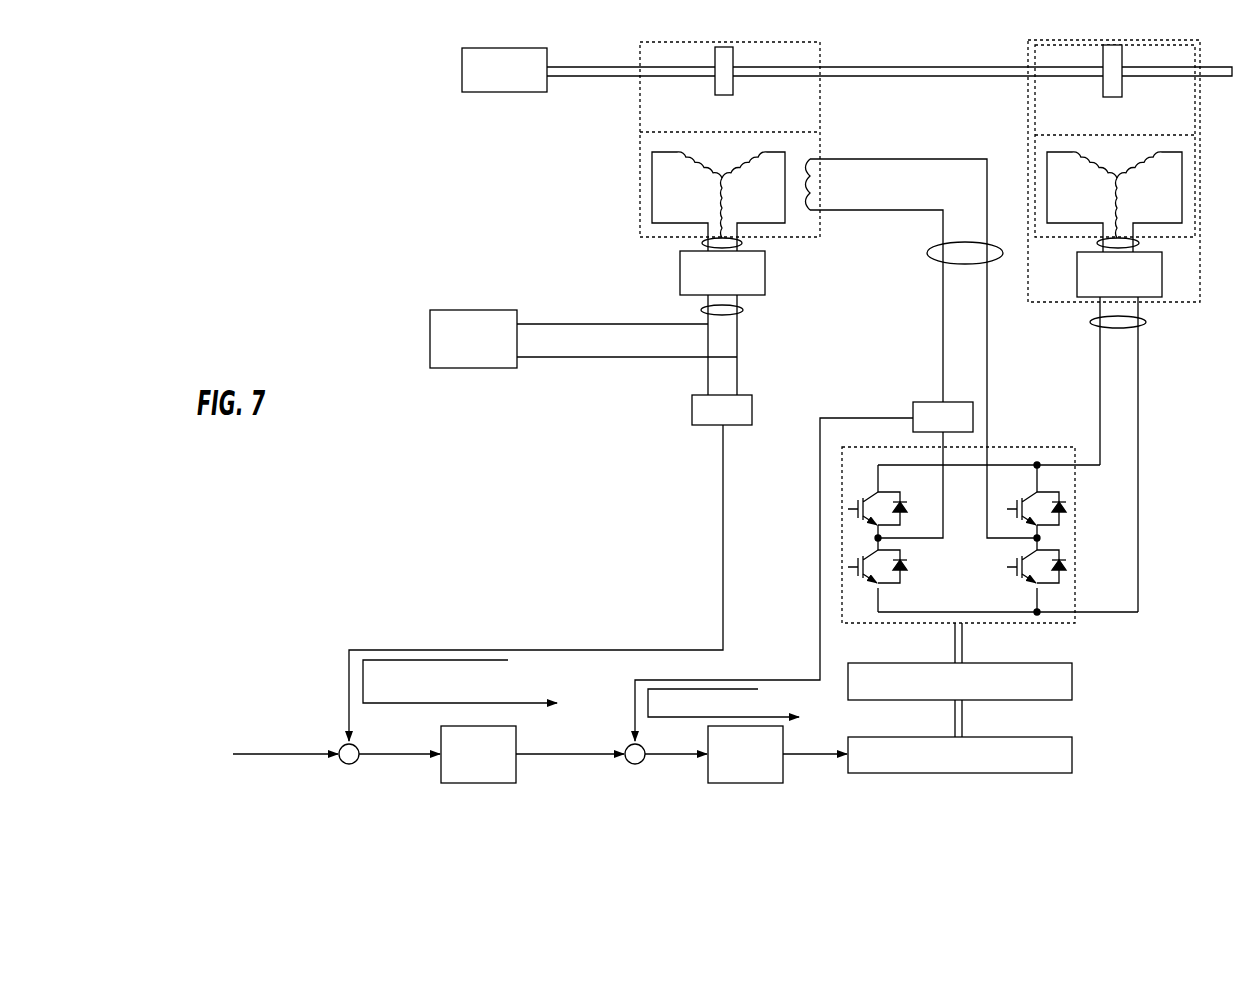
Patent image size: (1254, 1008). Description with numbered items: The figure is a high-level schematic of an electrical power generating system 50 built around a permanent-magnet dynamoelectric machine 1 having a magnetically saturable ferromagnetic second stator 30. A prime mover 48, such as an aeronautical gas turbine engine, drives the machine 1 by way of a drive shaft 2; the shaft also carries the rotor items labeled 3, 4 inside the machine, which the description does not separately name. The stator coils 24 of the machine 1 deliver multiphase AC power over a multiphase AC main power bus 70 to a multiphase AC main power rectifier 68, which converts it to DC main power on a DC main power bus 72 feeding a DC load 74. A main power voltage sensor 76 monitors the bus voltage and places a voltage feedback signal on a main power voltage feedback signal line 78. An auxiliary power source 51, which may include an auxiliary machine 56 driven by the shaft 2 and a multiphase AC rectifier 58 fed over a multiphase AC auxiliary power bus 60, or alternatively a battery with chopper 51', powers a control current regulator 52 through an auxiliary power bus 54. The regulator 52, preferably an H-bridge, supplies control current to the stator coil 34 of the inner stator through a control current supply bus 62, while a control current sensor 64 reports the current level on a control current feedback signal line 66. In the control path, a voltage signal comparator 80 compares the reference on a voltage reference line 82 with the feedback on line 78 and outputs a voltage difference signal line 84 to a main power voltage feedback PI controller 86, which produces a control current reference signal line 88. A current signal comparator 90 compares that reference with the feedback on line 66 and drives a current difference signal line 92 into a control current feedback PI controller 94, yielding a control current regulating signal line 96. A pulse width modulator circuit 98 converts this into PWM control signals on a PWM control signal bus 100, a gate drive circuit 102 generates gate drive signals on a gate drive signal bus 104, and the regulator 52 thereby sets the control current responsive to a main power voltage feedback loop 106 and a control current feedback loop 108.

The dynamoelectric machine 1 is at (637, 118).
The drive shaft 2 is at (900, 66).
The rotor magnet 3 is at (722, 89).
The rotor magnet 4 is at (724, 71).
The stator coils 24 is at (728, 190).
The magnetically saturable ferromagnetic second stator 30 is at (922, 316).
The stator coil 34 is at (812, 197).
The prime mover 48 is at (493, 83).
The electrical power generating system 50 is at (394, 179).
The auxiliary power source 51 is at (1107, 194).
The battery with chopper 51' is at (1182, 538).
The control current regulator 52 is at (1017, 446).
The auxiliary power bus 54 is at (1147, 322).
The auxiliary machine 56 is at (1073, 240).
The multiphase AC rectifier 58 is at (1108, 287).
The multiphase AC auxiliary power bus 60 is at (1140, 243).
The control current supply bus 62 is at (929, 256).
The control current sensor 64 is at (932, 429).
The control current feedback signal line 66 is at (885, 417).
The multiphase AC main power rectifier 68 is at (711, 286).
The multiphase AC main power bus 70 is at (745, 243).
The DC main power bus 72 is at (745, 310).
The DC load 74 is at (462, 352).
The main power voltage sensor 76 is at (711, 422).
The main power voltage feedback signal line 78 is at (722, 466).
The voltage signal comparator 80 is at (360, 748).
The voltage reference line 82 is at (262, 754).
The voltage difference signal line 84 is at (399, 754).
The main power voltage feedback PI controller 86 is at (467, 767).
The control current reference signal line 88 is at (523, 754).
The current signal comparator 90 is at (628, 745).
The current difference signal line 92 is at (660, 754).
The control current feedback PI controller 94 is at (734, 767).
The control current regulating signal line 96 is at (795, 754).
The pulse width modulator circuit 98 is at (949, 768).
The PWM control signal bus 100 is at (962, 703).
The gate drive circuit 102 is at (943, 694).
The gate drive signal bus 104 is at (962, 628).
The main power voltage feedback loop 106 is at (519, 697).
The control current feedback loop 108 is at (765, 712).